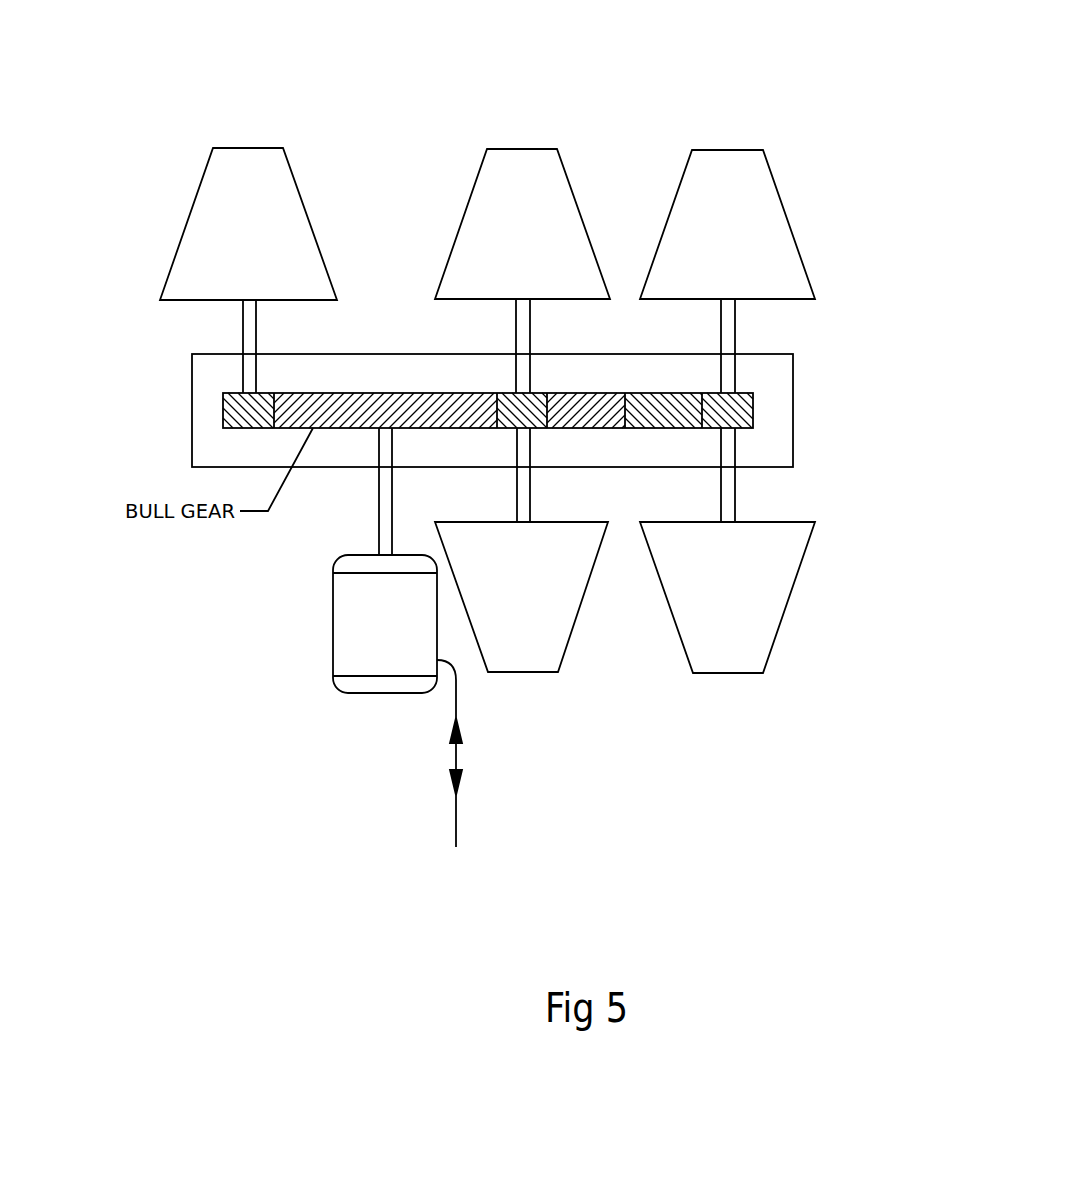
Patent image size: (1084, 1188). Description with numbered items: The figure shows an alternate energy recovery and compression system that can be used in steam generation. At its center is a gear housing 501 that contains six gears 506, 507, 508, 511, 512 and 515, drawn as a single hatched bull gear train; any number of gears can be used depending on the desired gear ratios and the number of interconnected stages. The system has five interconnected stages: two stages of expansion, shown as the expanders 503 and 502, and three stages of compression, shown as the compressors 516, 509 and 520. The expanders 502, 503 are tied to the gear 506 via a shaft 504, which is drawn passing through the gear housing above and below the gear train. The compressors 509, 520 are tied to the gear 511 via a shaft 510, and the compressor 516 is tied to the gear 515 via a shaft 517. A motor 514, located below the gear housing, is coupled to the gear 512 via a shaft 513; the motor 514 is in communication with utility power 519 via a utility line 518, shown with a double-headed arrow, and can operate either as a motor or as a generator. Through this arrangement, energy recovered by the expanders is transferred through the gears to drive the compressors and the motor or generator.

The gear housing 501 is at (577, 410).
The expander 502 is at (776, 626).
The expander 503 is at (779, 204).
The shaft 504 is at (842, 410).
The gear 506 is at (832, 419).
The gear 507 is at (794, 351).
The gear 508 is at (755, 465).
The compressor 509 is at (571, 626).
The shaft 510 is at (585, 410).
The gear 511 is at (478, 454).
The gear 512 is at (385, 366).
The shaft 513 is at (295, 503).
The motor 514 is at (313, 624).
The gear 515 is at (158, 433).
The compressor 516 is at (211, 168).
The shaft 517 is at (159, 346).
The utility line 518 is at (526, 719).
The utility power 519 is at (454, 798).
The compressor 520 is at (561, 168).